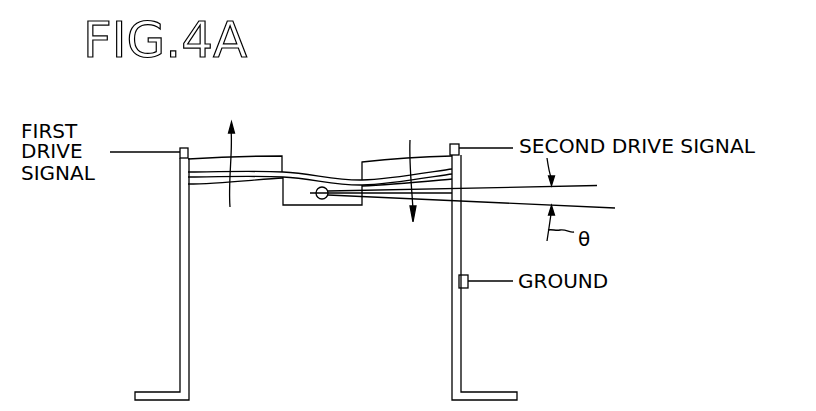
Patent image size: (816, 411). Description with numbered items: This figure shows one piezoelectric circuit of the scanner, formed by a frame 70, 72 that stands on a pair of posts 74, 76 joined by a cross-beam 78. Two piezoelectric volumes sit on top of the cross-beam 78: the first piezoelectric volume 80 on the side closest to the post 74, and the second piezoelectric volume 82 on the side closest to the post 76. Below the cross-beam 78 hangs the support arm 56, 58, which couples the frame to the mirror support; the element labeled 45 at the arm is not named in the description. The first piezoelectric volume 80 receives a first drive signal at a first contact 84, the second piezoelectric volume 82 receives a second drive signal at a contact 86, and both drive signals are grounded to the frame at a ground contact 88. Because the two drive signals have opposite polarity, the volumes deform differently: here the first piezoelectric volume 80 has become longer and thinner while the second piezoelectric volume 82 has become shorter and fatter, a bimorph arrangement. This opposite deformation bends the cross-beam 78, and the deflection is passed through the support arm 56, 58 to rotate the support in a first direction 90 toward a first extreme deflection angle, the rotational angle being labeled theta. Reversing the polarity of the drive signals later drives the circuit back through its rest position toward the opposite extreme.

The frame 70 is at (350, 211).
The frame 72 is at (486, 91).
The post 74 is at (189, 365).
The post 76 is at (452, 350).
The cross-beam 78 is at (260, 184).
The first piezoelectric volume 80 is at (267, 156).
The second piezoelectric volume 82 is at (377, 162).
The first contact 84 is at (186, 148).
The contact 86 is at (457, 144).
The ground contact 88 is at (467, 275).
The first direction 90 is at (236, 147).
The pivot axis 45 is at (318, 198).
The support arm 56 is at (339, 222).
The support arm 58 is at (352, 205).